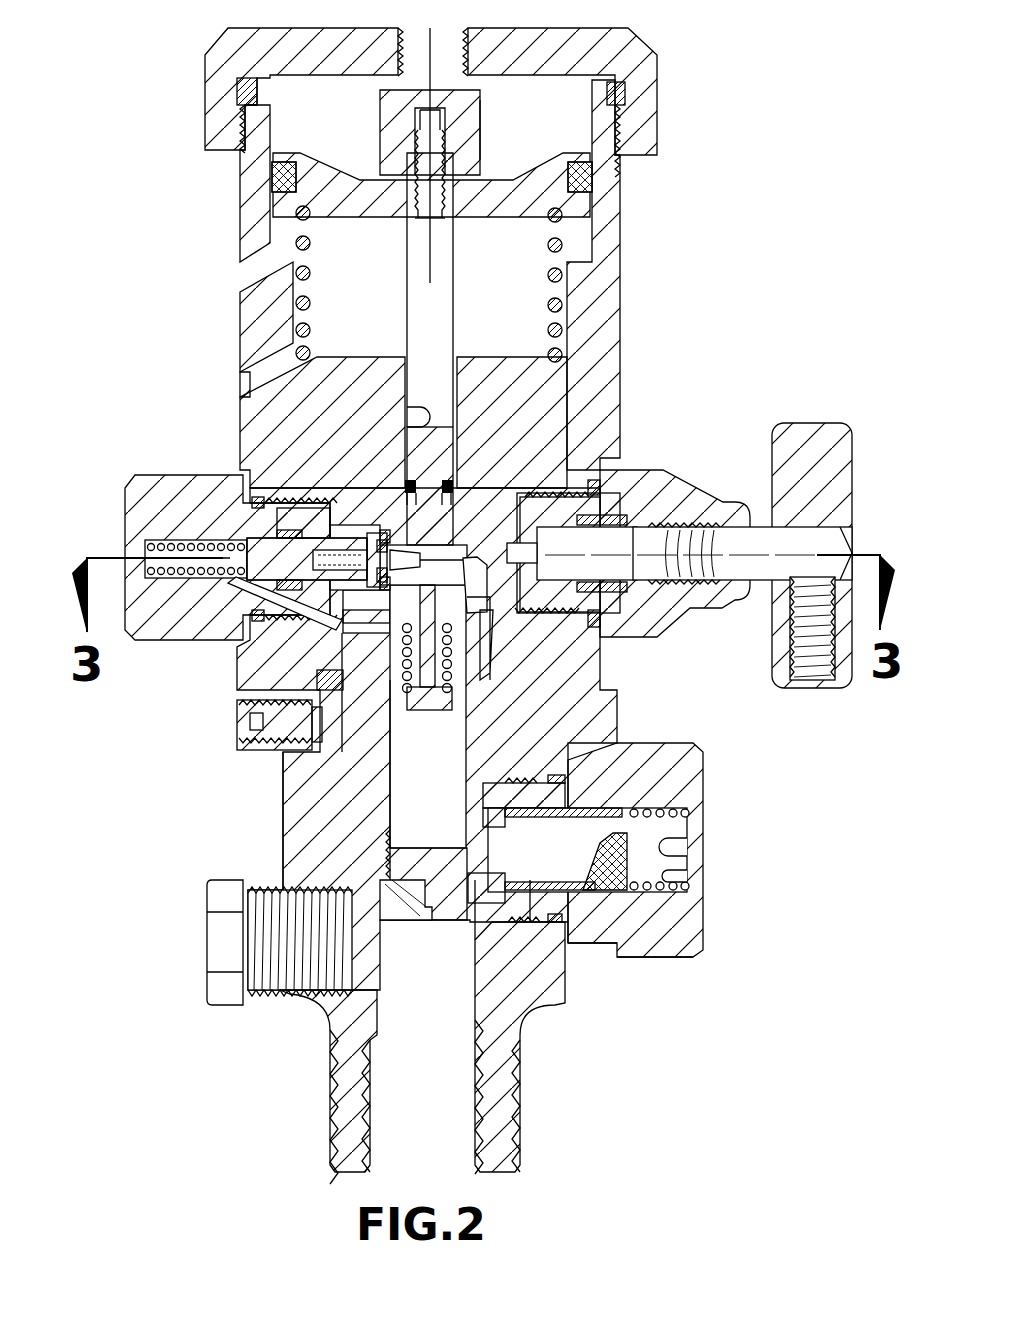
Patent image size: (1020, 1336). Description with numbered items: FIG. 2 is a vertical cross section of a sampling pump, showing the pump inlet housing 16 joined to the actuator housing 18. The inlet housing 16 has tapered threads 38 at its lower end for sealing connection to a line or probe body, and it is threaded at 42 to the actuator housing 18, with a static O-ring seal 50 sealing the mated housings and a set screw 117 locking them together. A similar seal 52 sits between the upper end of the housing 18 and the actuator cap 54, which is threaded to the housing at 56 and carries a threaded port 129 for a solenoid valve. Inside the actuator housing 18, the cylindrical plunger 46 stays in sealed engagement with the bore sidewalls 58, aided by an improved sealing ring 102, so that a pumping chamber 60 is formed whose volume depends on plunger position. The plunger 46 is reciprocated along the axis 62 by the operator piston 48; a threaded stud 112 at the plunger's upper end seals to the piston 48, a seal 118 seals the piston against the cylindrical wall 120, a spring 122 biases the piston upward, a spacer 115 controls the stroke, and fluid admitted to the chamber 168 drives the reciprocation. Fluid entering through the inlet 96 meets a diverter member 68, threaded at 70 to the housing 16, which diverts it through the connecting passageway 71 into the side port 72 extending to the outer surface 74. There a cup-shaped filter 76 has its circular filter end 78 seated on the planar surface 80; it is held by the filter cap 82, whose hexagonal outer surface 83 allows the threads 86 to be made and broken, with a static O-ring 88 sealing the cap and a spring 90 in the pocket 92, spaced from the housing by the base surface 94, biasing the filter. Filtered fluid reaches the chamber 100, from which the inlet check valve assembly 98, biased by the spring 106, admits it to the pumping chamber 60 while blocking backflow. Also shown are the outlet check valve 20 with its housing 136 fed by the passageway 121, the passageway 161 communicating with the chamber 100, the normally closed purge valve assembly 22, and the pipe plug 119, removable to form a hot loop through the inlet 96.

The threaded port 129 is at (390, 57).
The actuator cap 54 is at (552, 42).
The spacer 115 is at (397, 110).
The axis 62 is at (432, 97).
The cylindrical wall 120 is at (272, 110).
The threaded stud 112 is at (425, 173).
The chamber 168 is at (553, 142).
The seal 52 is at (625, 92).
The threads 56 is at (615, 124).
The seal 118 is at (272, 178).
The operator piston 48 is at (305, 192).
The actuator housing 18 is at (608, 291).
The spring 122 is at (560, 331).
The sealing ring 102 is at (450, 485).
The purge valve assembly 22 is at (675, 449).
The outlet check valve 20 is at (110, 467).
The bore sidewalls 58 is at (423, 425).
The plunger 46 is at (423, 452).
The housing 136 is at (130, 518).
The passageway 121 is at (320, 625).
The inlet check valve assembly 98 is at (411, 668).
The static O-ring seal 50 is at (330, 683).
The set screw 117 is at (282, 723).
The spring 106 is at (345, 740).
The threads 70 is at (383, 855).
The diverter member 68 is at (417, 858).
The pipe plug 119 is at (290, 967).
The threads 86 is at (530, 783).
The circular filter end 78 is at (497, 813).
The chamber 100 is at (438, 830).
The planar surface 80 is at (485, 880).
The side port 72 is at (570, 862).
The filter cap 82 is at (672, 762).
The pocket 92 is at (625, 837).
The cup-shaped filter 76 is at (642, 823).
The base surface 94 is at (662, 837).
The spring 90 is at (662, 872).
The connecting passageway 71 is at (492, 908).
The outer surface 74 is at (568, 973).
The pump inlet housing 16 is at (553, 993).
The hexagonal outer surface 83 is at (650, 958).
The static O-ring 88 is at (520, 958).
The tapered threads 38 is at (513, 1072).
The inlet 96 is at (433, 1115).
The pumping chamber 60 is at (598, 607).
The passageway 161 is at (430, 572).
The threads 42 is at (517, 660).